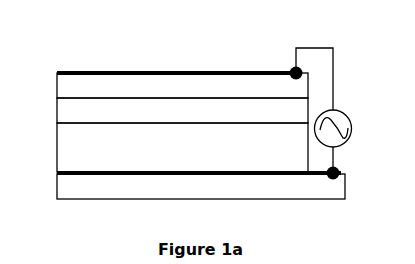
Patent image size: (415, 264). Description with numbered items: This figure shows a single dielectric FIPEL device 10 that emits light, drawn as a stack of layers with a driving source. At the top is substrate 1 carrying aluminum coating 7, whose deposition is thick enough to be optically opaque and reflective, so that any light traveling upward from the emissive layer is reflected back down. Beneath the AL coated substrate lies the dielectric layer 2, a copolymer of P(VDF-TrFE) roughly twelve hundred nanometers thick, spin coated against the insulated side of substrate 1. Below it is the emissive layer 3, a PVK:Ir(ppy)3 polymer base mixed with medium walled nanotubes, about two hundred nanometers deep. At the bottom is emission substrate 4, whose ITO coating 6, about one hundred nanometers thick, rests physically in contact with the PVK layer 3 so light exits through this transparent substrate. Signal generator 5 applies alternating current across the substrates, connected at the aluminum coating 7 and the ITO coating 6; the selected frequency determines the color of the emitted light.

The single dielectric FIPEL device 10 is at (132, 32).
The substrate 1 is at (54, 85).
The dielectric layer 2 is at (54, 110).
The emissive layer 3 is at (54, 148).
The emission substrate 4 is at (54, 185).
The signal generator 5 is at (356, 129).
The ITO coating 6 is at (90, 178).
The aluminum coating 7 is at (234, 70).